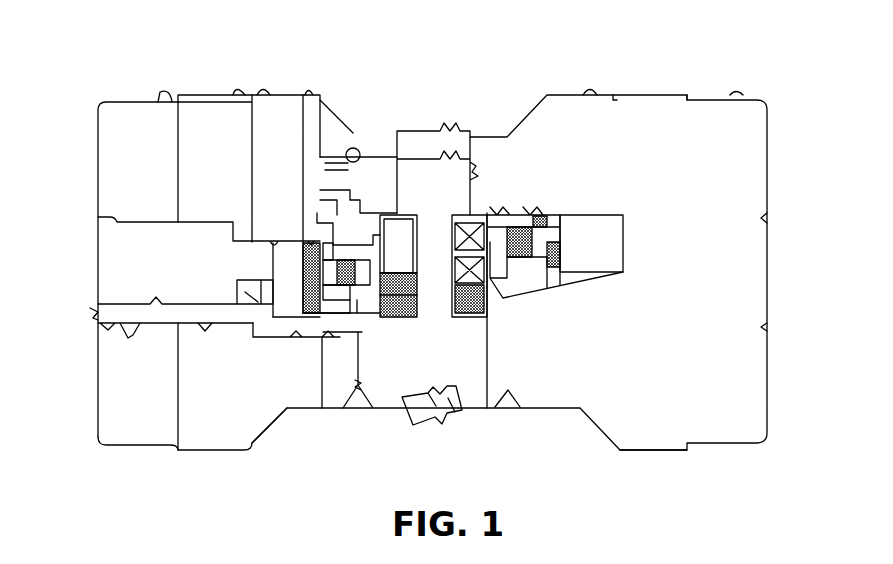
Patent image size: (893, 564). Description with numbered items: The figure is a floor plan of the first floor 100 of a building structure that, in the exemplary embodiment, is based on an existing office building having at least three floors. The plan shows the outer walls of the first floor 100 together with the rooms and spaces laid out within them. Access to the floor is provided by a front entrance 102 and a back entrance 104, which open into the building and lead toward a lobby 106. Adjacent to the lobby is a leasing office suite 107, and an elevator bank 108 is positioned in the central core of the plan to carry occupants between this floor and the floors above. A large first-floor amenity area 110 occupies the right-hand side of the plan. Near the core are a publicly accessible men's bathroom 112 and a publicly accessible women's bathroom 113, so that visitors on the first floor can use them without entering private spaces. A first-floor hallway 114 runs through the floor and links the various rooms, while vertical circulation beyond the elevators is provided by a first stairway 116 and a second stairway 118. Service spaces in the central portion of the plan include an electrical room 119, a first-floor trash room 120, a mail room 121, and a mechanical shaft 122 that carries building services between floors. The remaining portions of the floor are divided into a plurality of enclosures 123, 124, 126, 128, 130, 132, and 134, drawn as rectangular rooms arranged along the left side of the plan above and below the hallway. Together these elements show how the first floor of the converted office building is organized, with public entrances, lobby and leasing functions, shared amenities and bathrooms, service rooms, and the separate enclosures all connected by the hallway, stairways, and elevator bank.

The first floor 100 is at (54, 49).
The front entrance 102 is at (427, 412).
The back entrance 104 is at (430, 120).
The lobby 106 is at (477, 393).
The leasing office suite 107 is at (388, 187).
The elevator bank 108 is at (440, 273).
The first-floor amenity area 110 is at (682, 258).
The publicly accessible men's bathroom 112 is at (283, 283).
The publicly accessible women's bathroom 113 is at (595, 253).
The first-floor hallway 114 is at (245, 325).
The first stairway 116 is at (380, 292).
The second stairway 118 is at (500, 243).
The electrical room 119 is at (335, 310).
The first-floor trash room 120 is at (250, 292).
The mail room 121 is at (340, 368).
The mechanical shaft 122 is at (403, 233).
The enclosure 123 is at (273, 395).
The enclosure 124 is at (217, 412).
The enclosure 126 is at (133, 407).
The enclosure 128 is at (137, 263).
The enclosure 130 is at (143, 173).
The enclosure 132 is at (210, 168).
The enclosure 134 is at (287, 170).